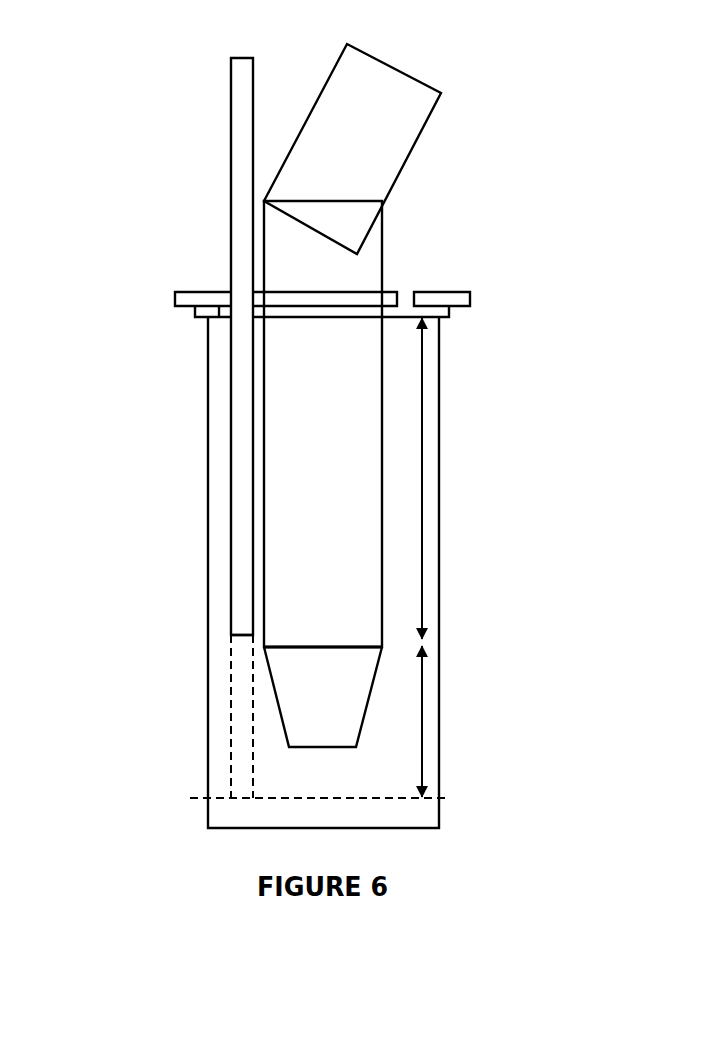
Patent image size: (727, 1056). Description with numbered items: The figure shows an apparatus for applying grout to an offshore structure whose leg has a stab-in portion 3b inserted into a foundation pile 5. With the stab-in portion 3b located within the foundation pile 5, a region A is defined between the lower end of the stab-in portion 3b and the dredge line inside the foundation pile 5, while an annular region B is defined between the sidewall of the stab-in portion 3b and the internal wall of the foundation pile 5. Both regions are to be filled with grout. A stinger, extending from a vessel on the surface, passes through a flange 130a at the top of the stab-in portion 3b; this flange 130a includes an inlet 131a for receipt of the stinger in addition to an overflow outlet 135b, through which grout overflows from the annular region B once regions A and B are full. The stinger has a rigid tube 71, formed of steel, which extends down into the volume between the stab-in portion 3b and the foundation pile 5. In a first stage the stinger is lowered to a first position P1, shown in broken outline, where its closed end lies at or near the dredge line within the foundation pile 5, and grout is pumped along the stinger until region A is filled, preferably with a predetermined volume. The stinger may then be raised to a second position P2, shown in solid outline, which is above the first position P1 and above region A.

The rigid tube 71 is at (232, 170).
The inlet 131a is at (228, 290).
The overflow outlet 135b is at (399, 288).
The flange 130a is at (467, 291).
The stab-in portion 3b is at (340, 446).
The foundation pile 5 is at (439, 557).
The annular region B is at (422, 465).
The region A is at (422, 717).
The second position P2 is at (232, 545).
The first position P1 is at (232, 738).